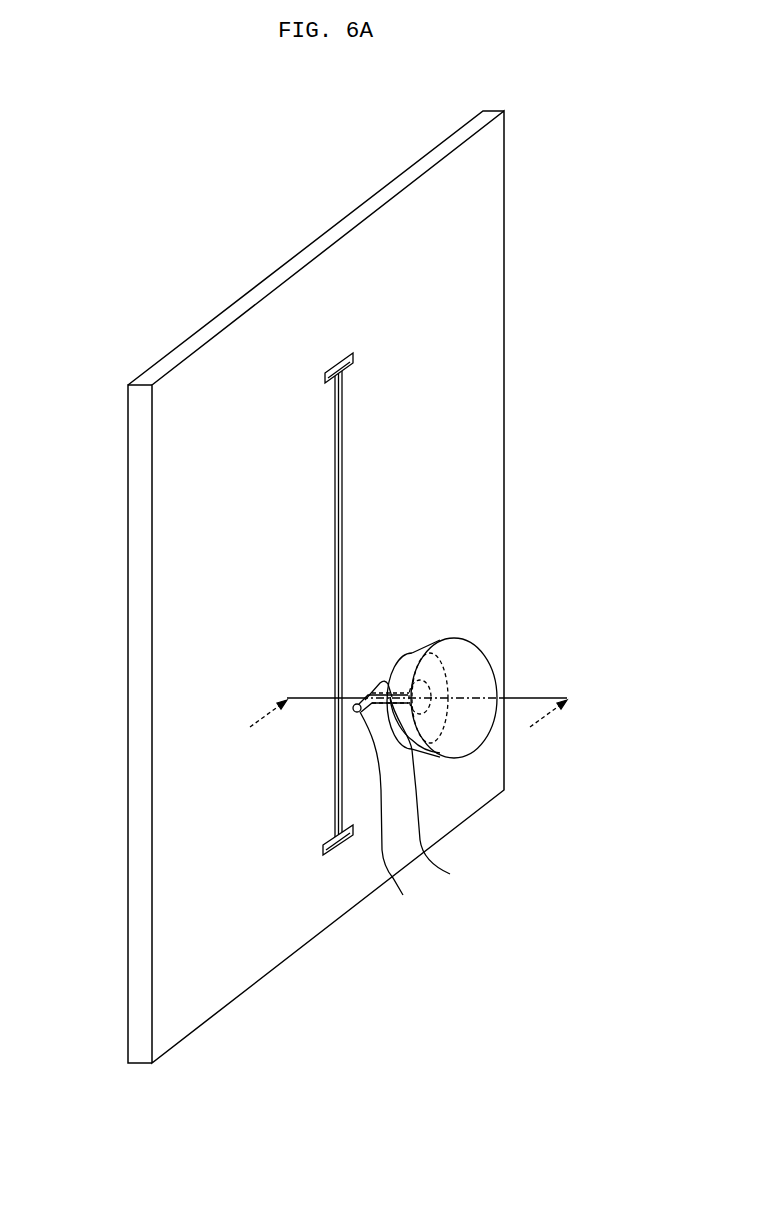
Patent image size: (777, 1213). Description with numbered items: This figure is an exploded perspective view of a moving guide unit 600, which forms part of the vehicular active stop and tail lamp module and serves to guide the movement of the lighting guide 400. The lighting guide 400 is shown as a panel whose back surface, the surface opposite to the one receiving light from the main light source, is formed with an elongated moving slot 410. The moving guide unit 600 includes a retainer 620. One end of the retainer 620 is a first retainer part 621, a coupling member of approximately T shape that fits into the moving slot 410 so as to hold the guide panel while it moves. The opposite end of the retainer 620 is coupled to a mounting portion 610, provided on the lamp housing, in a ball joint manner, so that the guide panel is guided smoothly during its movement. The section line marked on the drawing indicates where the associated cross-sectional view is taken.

The moving guide unit 600 is at (67, 138).
The lighting guide 400 is at (450, 330).
The moving slot 410 is at (342, 435).
The mounting portion 610 is at (465, 673).
The retainer 620 is at (421, 785).
The first retainer part 621 is at (399, 815).